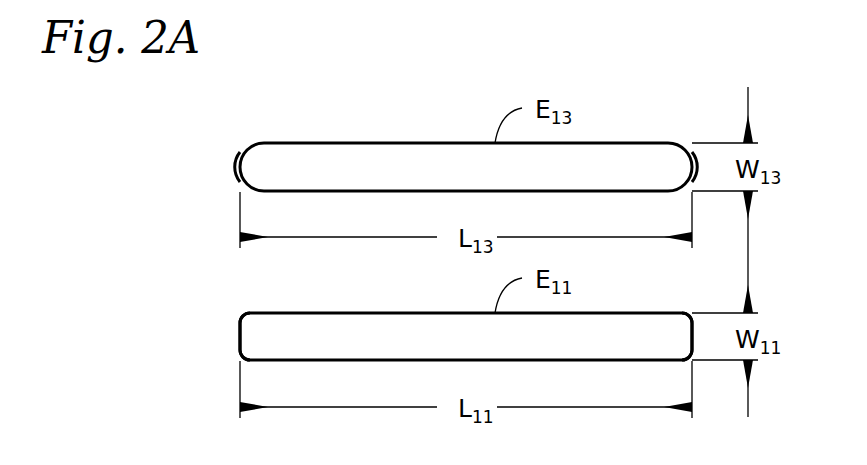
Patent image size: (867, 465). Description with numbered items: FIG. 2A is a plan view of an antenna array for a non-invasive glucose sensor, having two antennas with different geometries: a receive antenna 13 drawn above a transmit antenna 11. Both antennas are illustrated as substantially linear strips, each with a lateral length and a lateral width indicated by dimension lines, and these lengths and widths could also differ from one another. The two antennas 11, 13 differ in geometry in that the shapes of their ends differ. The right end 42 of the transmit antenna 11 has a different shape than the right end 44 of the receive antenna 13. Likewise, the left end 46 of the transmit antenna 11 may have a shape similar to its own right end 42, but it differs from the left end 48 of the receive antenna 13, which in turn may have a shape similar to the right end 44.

The receive antenna 13 is at (287, 143).
The left end of the antenna 13 48 is at (241, 163).
The right end of the antenna 13 44 is at (693, 159).
The transmit antenna 11 is at (287, 313).
The left end of the antenna 11 46 is at (240, 338).
The right end of the antenna 11 42 is at (693, 333).